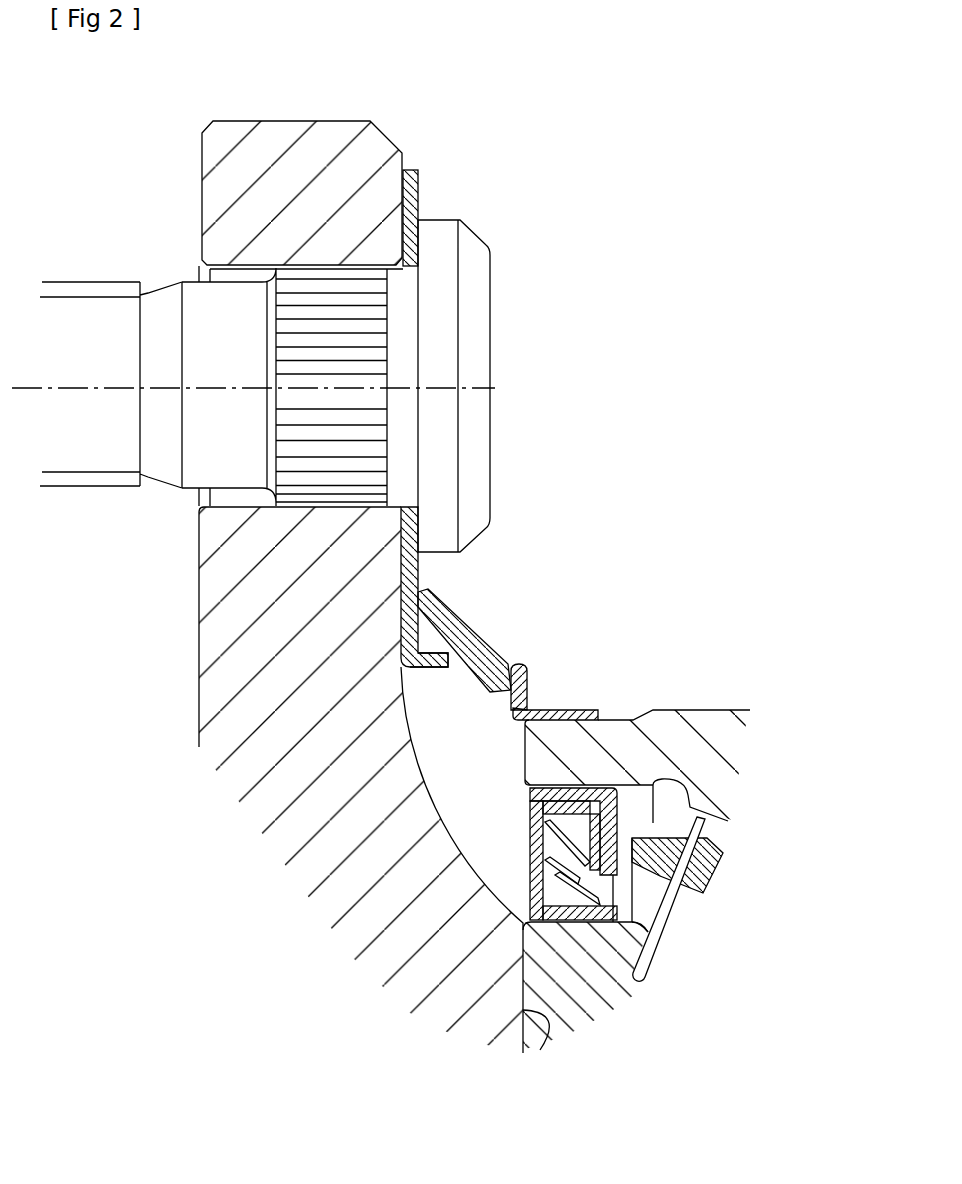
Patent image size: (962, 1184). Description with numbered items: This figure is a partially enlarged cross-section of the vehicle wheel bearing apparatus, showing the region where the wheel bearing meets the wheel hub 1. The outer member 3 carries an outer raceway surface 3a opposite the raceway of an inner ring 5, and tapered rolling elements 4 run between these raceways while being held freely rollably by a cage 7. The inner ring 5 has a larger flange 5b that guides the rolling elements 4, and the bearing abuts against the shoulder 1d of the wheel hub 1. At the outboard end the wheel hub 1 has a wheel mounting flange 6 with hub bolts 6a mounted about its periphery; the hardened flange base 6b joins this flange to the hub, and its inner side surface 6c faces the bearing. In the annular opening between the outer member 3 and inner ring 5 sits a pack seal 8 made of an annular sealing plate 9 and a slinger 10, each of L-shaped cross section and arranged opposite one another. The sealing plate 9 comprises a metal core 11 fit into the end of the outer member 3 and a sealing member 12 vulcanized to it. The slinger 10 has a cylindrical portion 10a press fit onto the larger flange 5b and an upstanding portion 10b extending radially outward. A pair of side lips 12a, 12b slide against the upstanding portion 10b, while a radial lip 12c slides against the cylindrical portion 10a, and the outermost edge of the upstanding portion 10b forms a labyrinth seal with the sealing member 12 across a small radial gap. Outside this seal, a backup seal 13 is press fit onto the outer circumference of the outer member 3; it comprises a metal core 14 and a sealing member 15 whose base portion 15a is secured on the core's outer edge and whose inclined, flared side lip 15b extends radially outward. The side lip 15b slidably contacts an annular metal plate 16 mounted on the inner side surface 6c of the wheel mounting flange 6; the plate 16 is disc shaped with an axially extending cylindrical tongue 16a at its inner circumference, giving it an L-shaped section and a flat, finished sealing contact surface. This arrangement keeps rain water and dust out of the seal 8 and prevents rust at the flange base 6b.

The wheel hub 1 is at (311, 780).
The shoulder 1d is at (521, 1046).
The outer member 3 is at (673, 723).
The outer raceway surface 3a is at (722, 852).
The rolling elements 4 is at (680, 903).
The inner ring 5 is at (604, 975).
The larger flange 5b is at (627, 942).
The wheel mounting flange 6 is at (287, 168).
The hub bolts 6a is at (432, 337).
The flange base 6b is at (452, 712).
The inner side surface 6c is at (450, 548).
The cage 7 is at (710, 866).
The seal 8 is at (342, 929).
The sealing plate 9 is at (369, 873).
The slinger 10 is at (369, 935).
The cylindrical portion 10a is at (580, 926).
The upstanding portion 10b is at (528, 900).
The metal core 11 is at (515, 793).
The sealing member 12 is at (397, 879).
The side lip 12a is at (528, 830).
The side lip 12b is at (528, 858).
The radial lip 12c is at (528, 880).
The backup seal 13 is at (548, 622).
The metal core 14 is at (560, 710).
The sealing member 15 is at (517, 617).
The base portion 15a is at (511, 666).
The side lip 15b is at (431, 608).
The annular metal plate 16 is at (412, 212).
The cylindrical tongue 16a is at (437, 662).